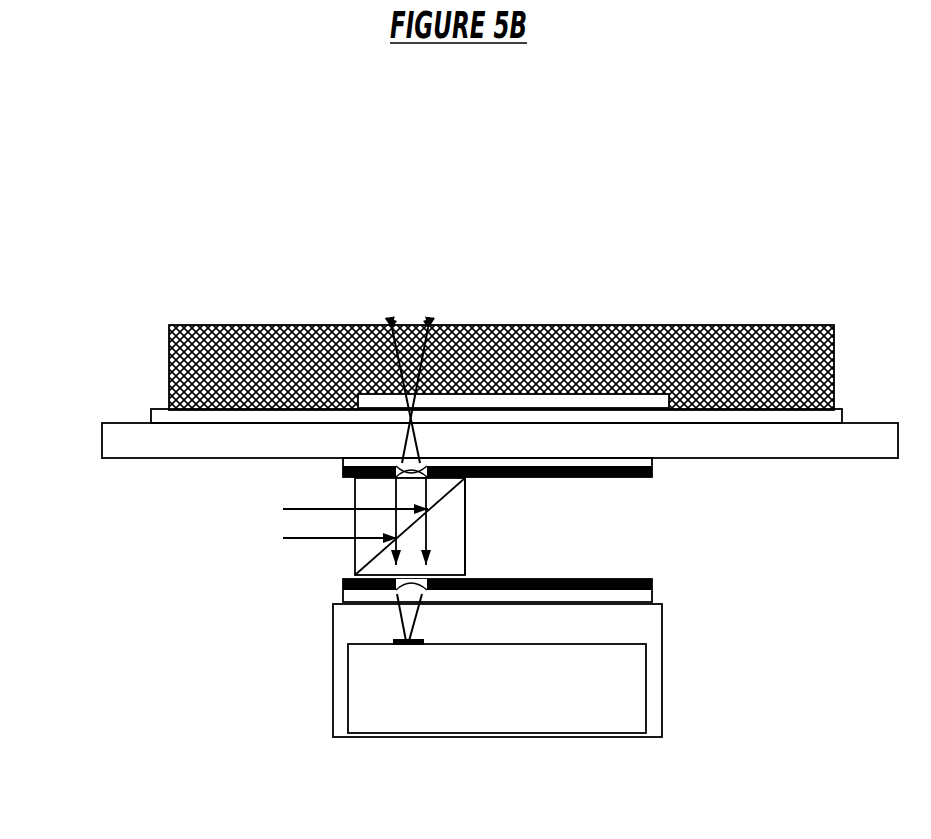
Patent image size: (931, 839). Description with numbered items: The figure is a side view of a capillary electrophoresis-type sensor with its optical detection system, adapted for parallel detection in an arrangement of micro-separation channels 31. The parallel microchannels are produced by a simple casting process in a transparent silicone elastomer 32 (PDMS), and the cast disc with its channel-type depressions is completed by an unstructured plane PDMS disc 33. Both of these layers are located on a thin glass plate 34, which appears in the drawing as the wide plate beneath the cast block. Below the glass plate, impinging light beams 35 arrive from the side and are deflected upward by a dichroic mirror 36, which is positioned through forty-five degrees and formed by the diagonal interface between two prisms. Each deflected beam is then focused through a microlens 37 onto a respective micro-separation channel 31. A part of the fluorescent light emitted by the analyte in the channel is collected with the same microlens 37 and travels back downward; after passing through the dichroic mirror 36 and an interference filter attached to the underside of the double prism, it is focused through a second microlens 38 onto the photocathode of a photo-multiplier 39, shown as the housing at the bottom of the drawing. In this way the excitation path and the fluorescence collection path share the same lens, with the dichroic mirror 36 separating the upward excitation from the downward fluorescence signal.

The micro-separation channels 31 is at (635, 398).
The transparent silicone elastomer 32 is at (210, 327).
The unstructured plane PDMS disc 33 is at (245, 413).
The thin glass plate 34 is at (120, 440).
The impinging light beams 35 is at (355, 538).
The dichroic mirror 36 is at (447, 538).
The microlens 37 is at (352, 480).
The second microlens 38 is at (343, 591).
The photo-multiplier 39 is at (413, 656).